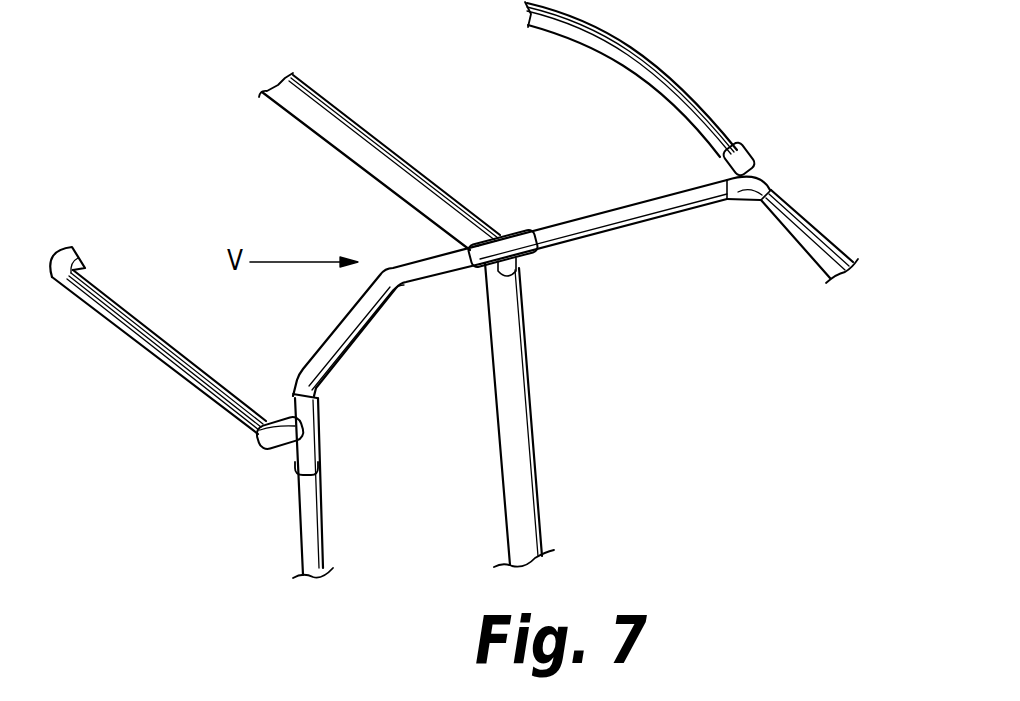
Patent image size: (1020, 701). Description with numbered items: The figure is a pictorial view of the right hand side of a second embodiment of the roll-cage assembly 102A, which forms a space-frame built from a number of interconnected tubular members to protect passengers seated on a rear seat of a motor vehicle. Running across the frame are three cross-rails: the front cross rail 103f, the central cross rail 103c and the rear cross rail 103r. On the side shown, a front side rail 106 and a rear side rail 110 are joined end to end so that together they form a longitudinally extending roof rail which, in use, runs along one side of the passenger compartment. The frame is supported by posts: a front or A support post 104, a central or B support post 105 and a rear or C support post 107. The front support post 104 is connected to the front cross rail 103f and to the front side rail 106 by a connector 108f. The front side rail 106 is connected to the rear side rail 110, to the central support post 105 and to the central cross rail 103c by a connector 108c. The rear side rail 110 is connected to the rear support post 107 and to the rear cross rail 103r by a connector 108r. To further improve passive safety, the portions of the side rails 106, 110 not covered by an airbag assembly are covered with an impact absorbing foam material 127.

The roll-cage assembly 102A is at (603, 237).
The rear cross rail 103r is at (130, 310).
The central cross rail 103c is at (413, 167).
The front cross rail 103f is at (677, 88).
The front support post 104 is at (807, 219).
The central support post 105 is at (530, 467).
The front side rail 106 is at (628, 206).
The rear support post 107 is at (320, 518).
The connector 108r is at (308, 435).
The connector 108c is at (533, 249).
The connector 108f is at (739, 160).
The rear side rail 110 is at (358, 331).
The impact absorbing foam material 127 is at (323, 354).